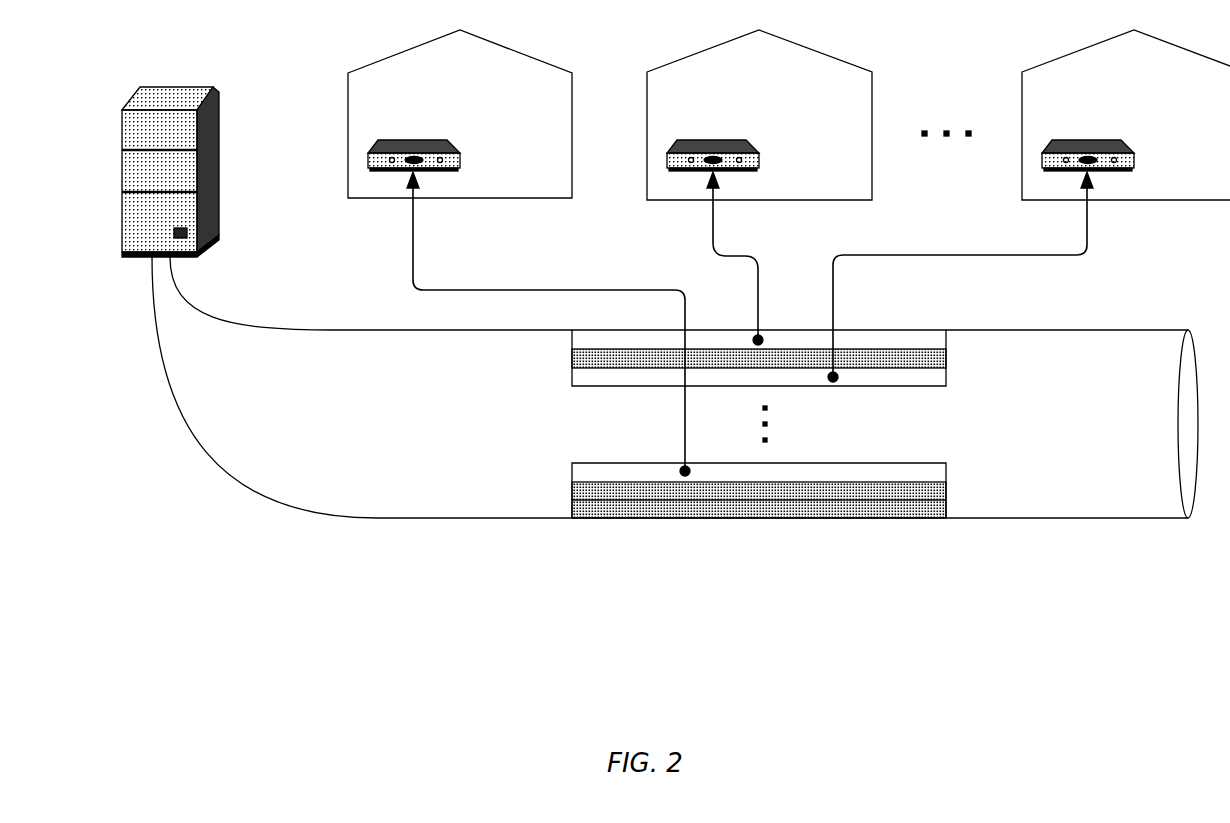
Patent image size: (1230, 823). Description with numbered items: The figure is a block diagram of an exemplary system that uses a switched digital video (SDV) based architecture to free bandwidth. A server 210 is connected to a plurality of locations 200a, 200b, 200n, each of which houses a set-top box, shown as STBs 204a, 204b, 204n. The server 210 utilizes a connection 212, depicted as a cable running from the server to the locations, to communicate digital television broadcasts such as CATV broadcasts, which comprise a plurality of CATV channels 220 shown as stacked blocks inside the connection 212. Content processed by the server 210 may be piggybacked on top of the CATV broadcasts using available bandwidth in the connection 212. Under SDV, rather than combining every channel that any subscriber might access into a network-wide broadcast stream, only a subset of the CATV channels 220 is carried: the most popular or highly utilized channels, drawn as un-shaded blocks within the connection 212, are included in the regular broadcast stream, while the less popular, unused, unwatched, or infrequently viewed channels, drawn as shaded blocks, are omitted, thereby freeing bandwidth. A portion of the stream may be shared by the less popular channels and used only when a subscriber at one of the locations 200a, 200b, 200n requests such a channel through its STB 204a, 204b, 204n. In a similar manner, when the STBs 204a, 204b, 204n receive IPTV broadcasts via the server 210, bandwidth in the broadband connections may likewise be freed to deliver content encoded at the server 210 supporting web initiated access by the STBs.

The server 210 is at (122, 182).
The connection 212 is at (1058, 519).
The CATV channels 220 is at (563, 340).
The location 200a is at (460, 114).
The location 200b is at (759, 115).
The location 200n is at (1126, 115).
The STB 204a is at (460, 152).
The STB 204b is at (760, 152).
The STB 204n is at (1133, 152).